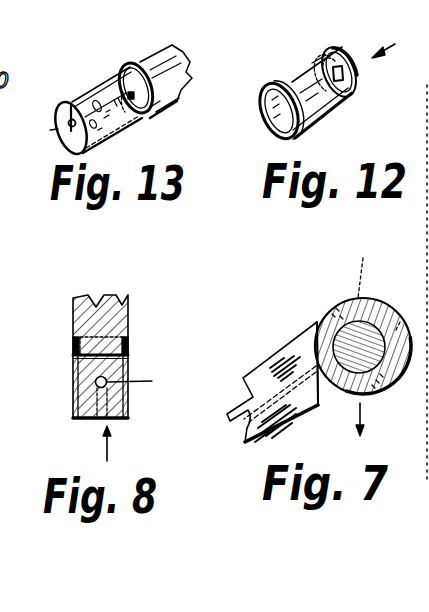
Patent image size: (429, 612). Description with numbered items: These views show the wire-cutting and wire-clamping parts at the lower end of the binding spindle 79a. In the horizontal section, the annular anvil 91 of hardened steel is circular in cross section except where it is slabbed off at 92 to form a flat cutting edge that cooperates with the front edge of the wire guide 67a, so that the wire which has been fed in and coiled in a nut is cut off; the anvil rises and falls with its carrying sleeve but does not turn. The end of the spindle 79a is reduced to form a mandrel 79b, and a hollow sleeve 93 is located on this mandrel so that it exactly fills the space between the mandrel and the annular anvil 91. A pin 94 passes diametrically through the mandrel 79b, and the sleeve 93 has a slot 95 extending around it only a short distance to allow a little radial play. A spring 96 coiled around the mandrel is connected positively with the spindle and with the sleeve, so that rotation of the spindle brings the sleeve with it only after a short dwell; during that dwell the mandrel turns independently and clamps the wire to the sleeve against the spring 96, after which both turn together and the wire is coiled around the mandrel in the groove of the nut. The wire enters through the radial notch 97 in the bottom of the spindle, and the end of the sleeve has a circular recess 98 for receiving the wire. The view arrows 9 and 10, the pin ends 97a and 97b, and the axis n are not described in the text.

In FIG. 13, the binding spindle 79a is at (167, 62).
In FIG. 8, the binding spindle 79a is at (128, 303).
In FIG. 13, the mandrel 79b is at (101, 97).
In FIG. 8, the mandrel 79b is at (128, 368).
In FIG. 13, the pin 94 is at (122, 92).
In FIG. 8, the pin 94 is at (73, 356).
In FIG. 13, the radial notch 97 is at (71, 106).
In FIG. 8, the radial notch 97 is at (98, 420).
In FIG. 12, the hollow sleeve 93 is at (290, 75).
In FIG. 8, the hollow sleeve 93 is at (73, 363).
In FIG. 12, the slot 95 is at (344, 80).
In FIG. 8, the slot 95 is at (73, 352).
In FIG. 12, the circular recess 98 is at (261, 114).
In FIG. 8, the circular recess 98 is at (76, 418).
In FIG. 12, the view direction arrow 9 is at (390, 53).
In FIG. 8, the spring 96 is at (128, 337).
In FIG. 8, the view direction arrow 10 is at (117, 443).
In FIG. 7, the annular anvil 91 is at (385, 308).
In FIG. 7, the pin end 97a is at (338, 304).
In FIG. 7, the pin end 97b is at (381, 383).
In FIG. 7, the axis n is at (400, 322).
In FIG. 7, the slabbed-off flat 92 is at (317, 322).
In FIG. 7, the wire guide 67a is at (273, 371).